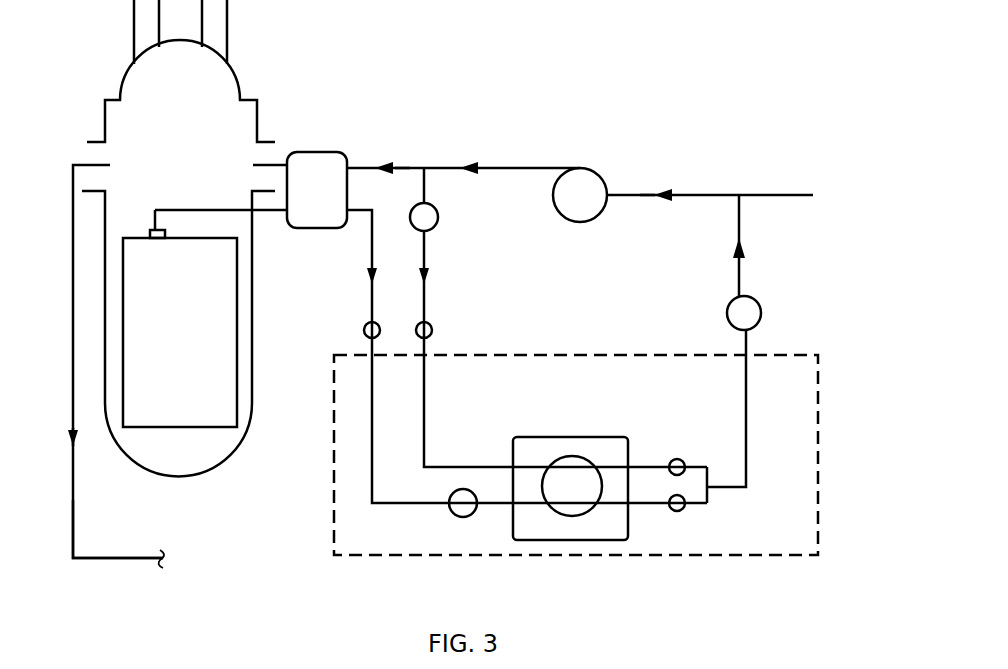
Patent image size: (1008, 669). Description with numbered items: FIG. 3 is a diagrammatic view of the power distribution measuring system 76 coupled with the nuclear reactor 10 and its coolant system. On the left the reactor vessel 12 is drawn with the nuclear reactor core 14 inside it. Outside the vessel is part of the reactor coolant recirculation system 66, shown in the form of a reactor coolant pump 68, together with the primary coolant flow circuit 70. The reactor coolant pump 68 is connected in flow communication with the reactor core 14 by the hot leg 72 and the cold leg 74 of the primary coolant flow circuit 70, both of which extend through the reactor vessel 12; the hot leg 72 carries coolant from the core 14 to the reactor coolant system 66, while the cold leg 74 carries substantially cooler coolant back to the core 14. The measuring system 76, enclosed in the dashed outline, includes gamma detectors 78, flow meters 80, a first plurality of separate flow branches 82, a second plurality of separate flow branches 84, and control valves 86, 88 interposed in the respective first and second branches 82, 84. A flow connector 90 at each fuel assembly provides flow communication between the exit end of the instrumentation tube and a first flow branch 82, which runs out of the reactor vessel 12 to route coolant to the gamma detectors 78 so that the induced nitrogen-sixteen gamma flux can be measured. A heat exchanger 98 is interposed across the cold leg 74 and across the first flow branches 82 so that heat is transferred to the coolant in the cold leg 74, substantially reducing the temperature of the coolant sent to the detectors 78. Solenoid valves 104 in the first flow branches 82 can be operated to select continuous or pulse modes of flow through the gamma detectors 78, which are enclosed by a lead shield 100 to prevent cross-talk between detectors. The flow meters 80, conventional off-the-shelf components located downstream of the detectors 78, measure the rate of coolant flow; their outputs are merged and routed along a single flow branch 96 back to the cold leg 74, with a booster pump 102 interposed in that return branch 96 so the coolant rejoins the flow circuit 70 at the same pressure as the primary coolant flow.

The reactor containment vessel 10 is at (248, 84).
The reactor vessel 12 is at (253, 323).
The nuclear reactor core 14 is at (238, 397).
The reactor coolant recirculation system 66 is at (487, 152).
The reactor coolant pump 68 is at (580, 168).
The primary coolant flow circuit 70 is at (690, 176).
The hot leg 72 is at (74, 522).
The cold leg 74 is at (403, 168).
The power distribution measuring system 76 is at (513, 353).
The gamma detectors 78 is at (573, 508).
The flow meters 80 is at (683, 508).
The first flow branches 82 is at (362, 212).
The second flow branches 84 is at (426, 397).
The control valve 86 is at (461, 517).
The control valve 88 is at (436, 223).
The flow connector 90 is at (152, 230).
The single flow branch 96 is at (748, 412).
The heat exchanger 98 is at (318, 151).
The lead shield 100 is at (605, 540).
The booster pump 102 is at (762, 310).
The solenoid valves 104 is at (423, 321).